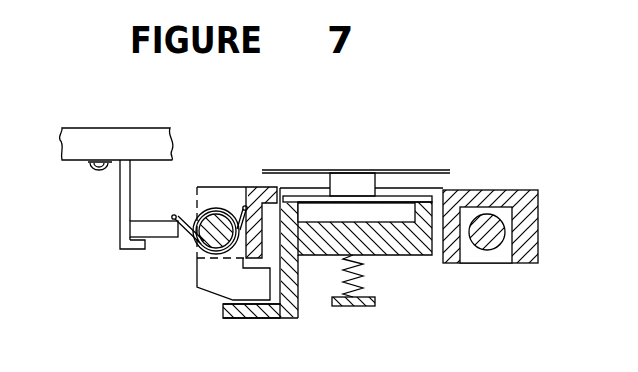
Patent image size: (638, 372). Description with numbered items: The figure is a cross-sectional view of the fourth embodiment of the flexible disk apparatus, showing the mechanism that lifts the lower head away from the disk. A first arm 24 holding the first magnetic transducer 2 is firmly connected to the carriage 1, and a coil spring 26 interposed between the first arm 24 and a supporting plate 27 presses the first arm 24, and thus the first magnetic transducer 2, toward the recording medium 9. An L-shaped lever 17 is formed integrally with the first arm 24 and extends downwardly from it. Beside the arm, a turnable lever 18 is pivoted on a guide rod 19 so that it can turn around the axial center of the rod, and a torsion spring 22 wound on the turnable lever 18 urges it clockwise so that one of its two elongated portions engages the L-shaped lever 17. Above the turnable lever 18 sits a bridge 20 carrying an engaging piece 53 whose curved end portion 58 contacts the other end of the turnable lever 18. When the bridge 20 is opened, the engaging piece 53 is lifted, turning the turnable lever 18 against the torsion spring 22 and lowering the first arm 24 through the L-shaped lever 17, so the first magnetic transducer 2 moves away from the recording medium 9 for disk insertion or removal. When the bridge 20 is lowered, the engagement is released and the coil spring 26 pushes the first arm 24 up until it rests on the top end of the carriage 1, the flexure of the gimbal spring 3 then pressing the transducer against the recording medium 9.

The carriage 1 is at (473, 190).
The first magnetic transducer 2 is at (355, 173).
The gimbal spring 3 is at (393, 196).
The recording medium 9 is at (288, 170).
The L-shaped lever 17 is at (302, 308).
The turnable lever 18 is at (198, 287).
The guide rod 19 is at (217, 226).
The bridge 20 is at (172, 143).
The torsion spring 22 is at (182, 230).
The first arm 24 is at (413, 255).
The coil spring 26 is at (360, 263).
The supporting plate 27 is at (348, 306).
The engaging piece 53 is at (118, 213).
The curved end portion 58 is at (127, 250).